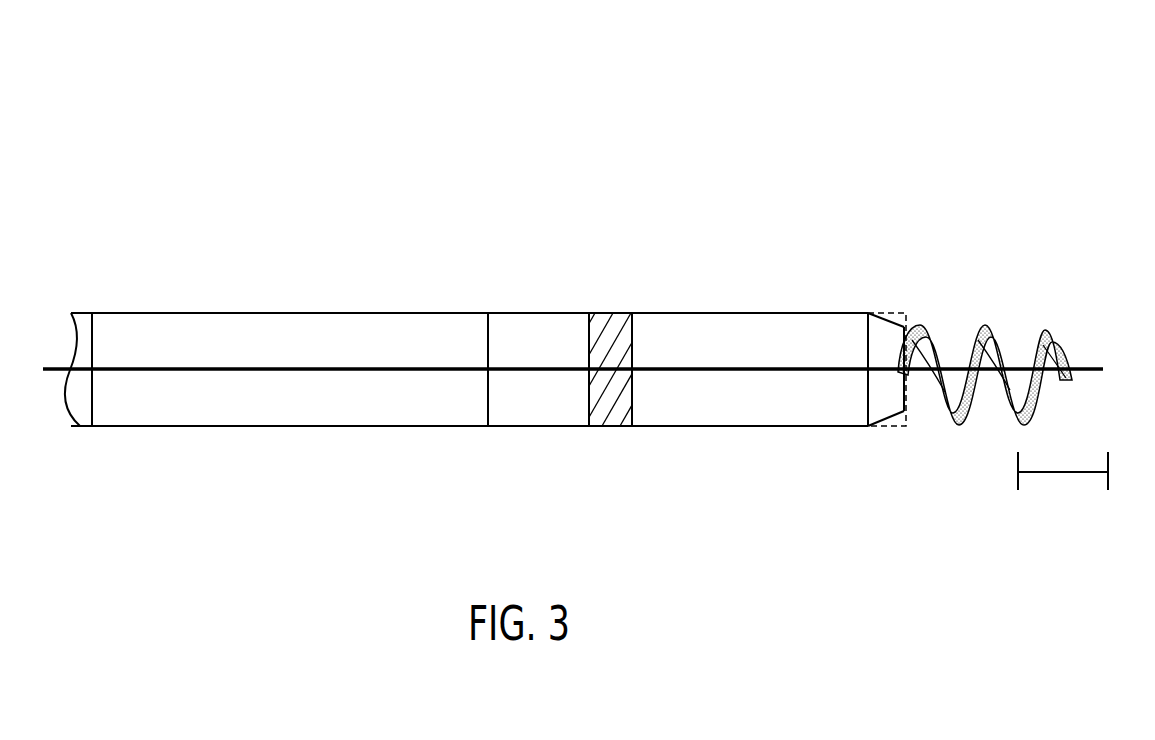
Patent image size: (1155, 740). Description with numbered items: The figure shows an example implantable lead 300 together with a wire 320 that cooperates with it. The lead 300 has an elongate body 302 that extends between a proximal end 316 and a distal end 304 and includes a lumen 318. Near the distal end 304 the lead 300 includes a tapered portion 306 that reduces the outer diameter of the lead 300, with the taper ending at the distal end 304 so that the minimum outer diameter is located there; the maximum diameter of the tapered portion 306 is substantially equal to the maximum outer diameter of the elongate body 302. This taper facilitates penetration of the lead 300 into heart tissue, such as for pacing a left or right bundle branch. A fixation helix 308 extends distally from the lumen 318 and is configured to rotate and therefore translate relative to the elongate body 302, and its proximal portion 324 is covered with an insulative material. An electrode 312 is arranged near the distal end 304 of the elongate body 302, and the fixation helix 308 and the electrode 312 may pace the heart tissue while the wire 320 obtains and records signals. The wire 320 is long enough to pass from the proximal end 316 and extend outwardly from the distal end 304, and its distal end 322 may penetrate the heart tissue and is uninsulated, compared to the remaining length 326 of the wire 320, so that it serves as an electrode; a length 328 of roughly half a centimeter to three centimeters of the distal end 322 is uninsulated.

The implantable lead 300 is at (152, 132).
The elongate body 302 is at (614, 325).
The distal end 304 is at (834, 284).
The tapered portion 306 is at (883, 430).
The fixation helix 308 is at (955, 405).
The electrode 312 is at (335, 412).
The proximal end 316 is at (83, 424).
The lumen 318 is at (920, 308).
The wire 320 is at (50, 372).
The distal end of the wire 322 is at (1088, 375).
The proximal portion of the fixation helix 324 is at (968, 385).
The remaining length of the wire 326 is at (732, 330).
The length of uninsulated distal end 328 is at (1060, 475).